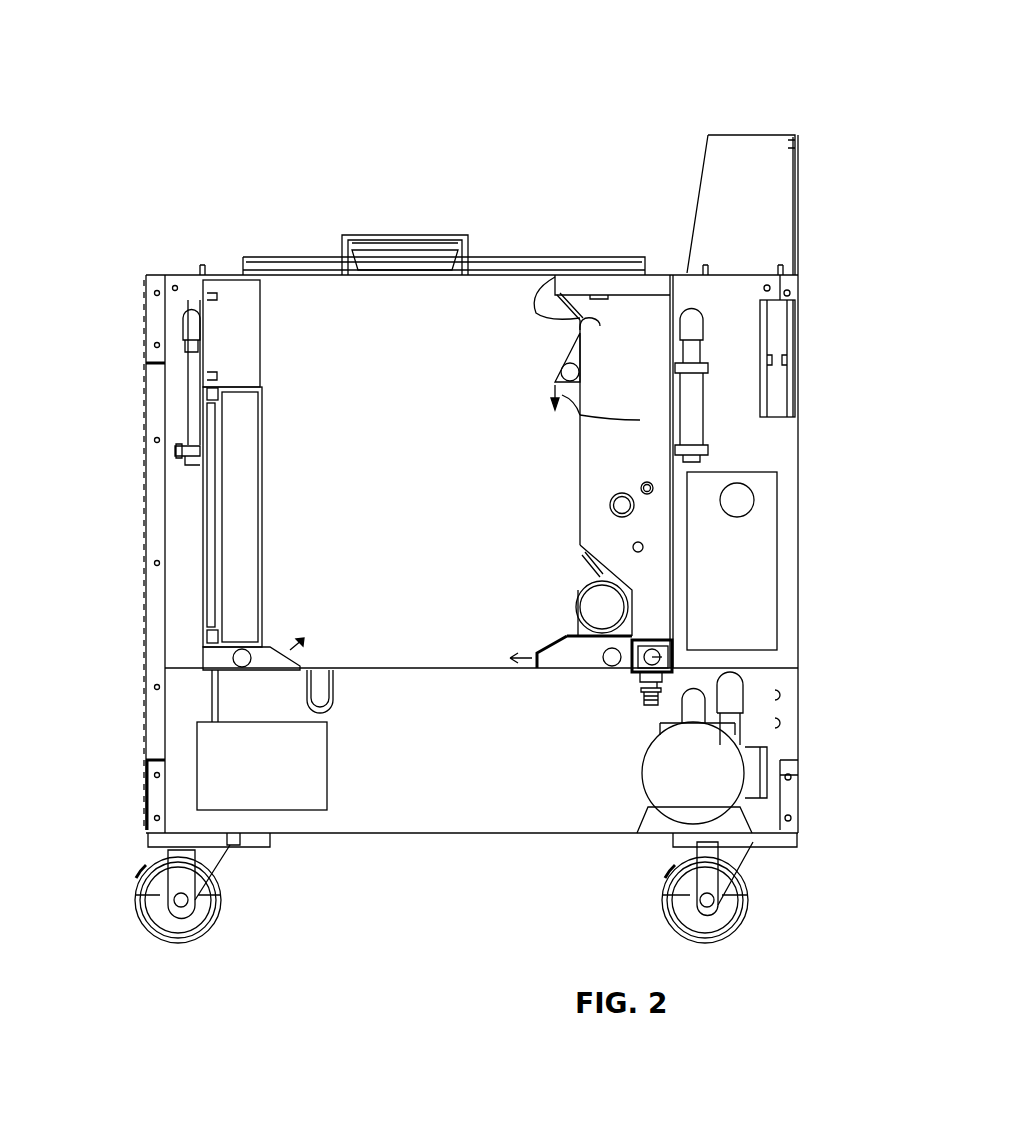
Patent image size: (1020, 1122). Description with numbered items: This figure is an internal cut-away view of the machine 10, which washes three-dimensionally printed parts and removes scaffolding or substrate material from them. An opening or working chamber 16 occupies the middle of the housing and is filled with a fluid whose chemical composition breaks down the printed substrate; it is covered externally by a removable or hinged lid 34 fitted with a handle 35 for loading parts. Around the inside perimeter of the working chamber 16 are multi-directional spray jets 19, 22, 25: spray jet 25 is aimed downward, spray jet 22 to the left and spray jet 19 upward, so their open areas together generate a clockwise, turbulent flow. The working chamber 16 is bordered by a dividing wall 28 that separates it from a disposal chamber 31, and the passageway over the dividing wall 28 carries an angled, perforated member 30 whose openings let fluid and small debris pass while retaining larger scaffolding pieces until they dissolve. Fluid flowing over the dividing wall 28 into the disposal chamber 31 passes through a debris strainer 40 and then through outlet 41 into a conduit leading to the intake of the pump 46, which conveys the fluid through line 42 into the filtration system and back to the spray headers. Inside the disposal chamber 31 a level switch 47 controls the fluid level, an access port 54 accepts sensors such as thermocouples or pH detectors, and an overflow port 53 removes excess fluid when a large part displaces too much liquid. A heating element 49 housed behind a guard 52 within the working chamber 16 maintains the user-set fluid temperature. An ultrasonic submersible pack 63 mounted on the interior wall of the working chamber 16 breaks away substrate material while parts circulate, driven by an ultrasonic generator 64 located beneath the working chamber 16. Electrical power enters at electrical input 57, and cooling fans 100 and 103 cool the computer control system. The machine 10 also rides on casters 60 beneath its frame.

The machine 10 is at (312, 88).
The lid 34 is at (278, 257).
The handle 35 is at (380, 242).
The dividing wall 28 is at (580, 418).
The perforated member 30 is at (535, 292).
The disposal chamber 31 is at (637, 385).
The cooling fan 100 is at (773, 340).
The cooling fan 103 is at (790, 365).
The line 42 is at (695, 400).
The spray jet 25 is at (583, 410).
The pump 46 is at (197, 398).
The overflow port 53 is at (653, 487).
The electrical input 57 is at (755, 500).
The level switch 47 is at (636, 508).
The access port 54 is at (645, 548).
The ultrasonic submersible pack 63 is at (243, 505).
The working chamber 16 is at (368, 553).
The spray jet 19 is at (222, 655).
The spray jet 22 is at (583, 660).
The guard 52 is at (575, 590).
The heating element 49 is at (605, 610).
The debris strainer 40 is at (662, 657).
The outlet 41 is at (653, 698).
The ultrasonic generator 64 is at (197, 770).
The wheel 60 is at (162, 912).